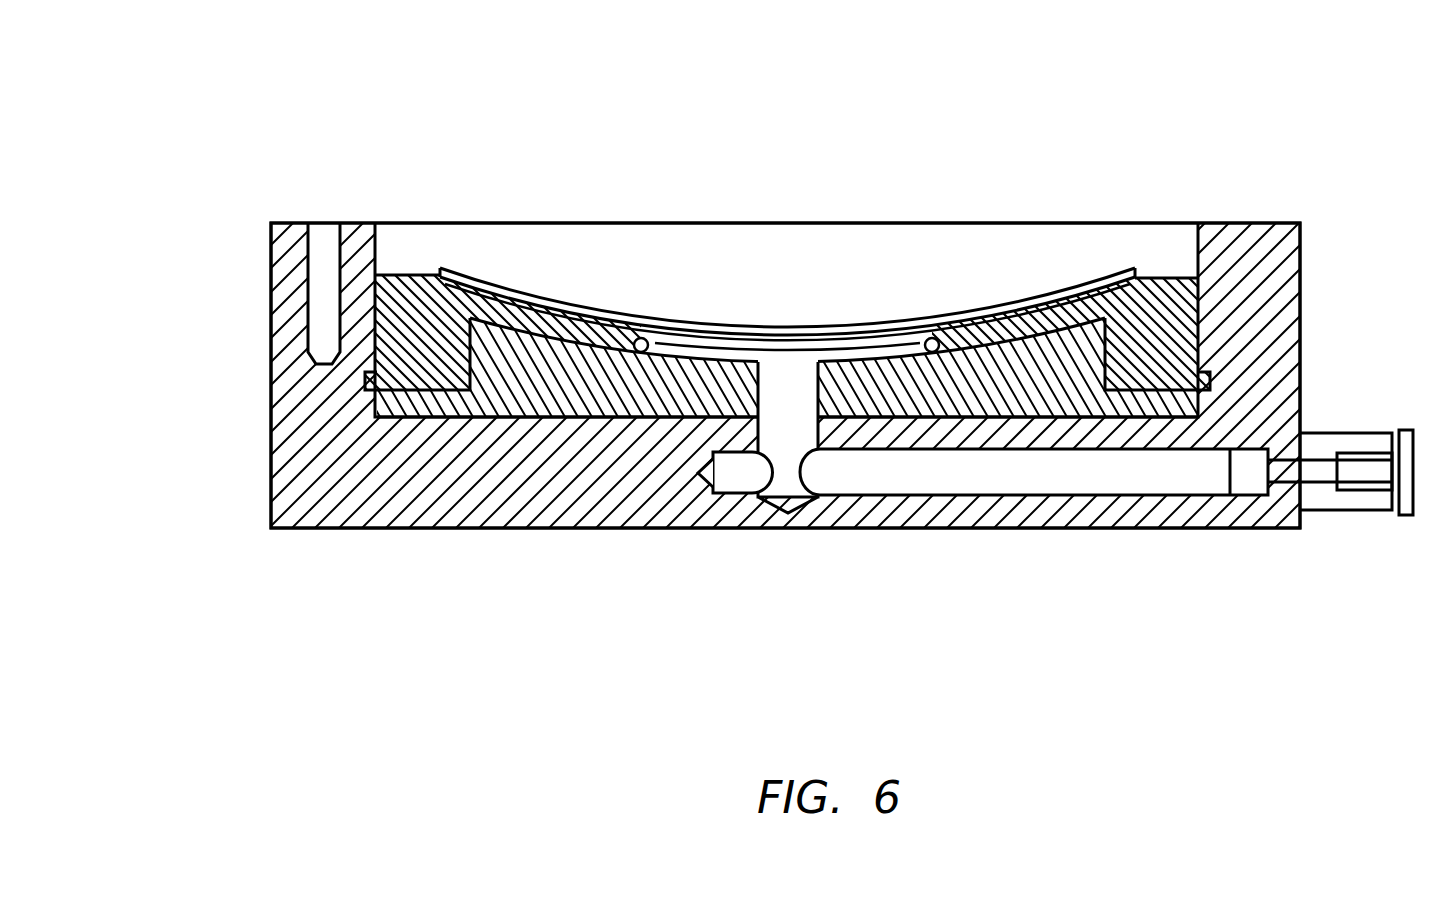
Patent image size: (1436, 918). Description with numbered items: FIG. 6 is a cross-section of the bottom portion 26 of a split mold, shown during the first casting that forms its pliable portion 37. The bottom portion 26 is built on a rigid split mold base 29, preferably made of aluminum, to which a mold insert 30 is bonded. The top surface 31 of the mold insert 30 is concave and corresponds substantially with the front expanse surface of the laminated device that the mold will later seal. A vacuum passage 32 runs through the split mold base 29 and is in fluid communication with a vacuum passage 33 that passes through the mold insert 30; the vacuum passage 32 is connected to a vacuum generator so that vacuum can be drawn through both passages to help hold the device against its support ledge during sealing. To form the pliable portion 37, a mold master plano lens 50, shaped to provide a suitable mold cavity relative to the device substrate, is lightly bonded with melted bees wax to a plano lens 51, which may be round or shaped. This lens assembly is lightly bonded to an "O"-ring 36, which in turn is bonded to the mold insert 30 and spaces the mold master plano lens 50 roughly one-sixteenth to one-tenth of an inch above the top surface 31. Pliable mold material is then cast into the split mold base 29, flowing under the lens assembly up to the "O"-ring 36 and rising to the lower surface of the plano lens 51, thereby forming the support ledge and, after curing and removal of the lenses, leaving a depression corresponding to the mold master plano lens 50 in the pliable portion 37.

The bottom portion 26 is at (236, 331).
The split mold base 29 is at (358, 504).
The mold insert 30 is at (1072, 384).
The top surface 31 is at (995, 326).
The vacuum passage 32 is at (1108, 493).
The vacuum passage 33 is at (789, 416).
The "O"-ring 36 is at (640, 369).
The pliable portion 37 is at (420, 270).
The mold master plano lens 50 is at (734, 316).
The plano lens 51 is at (827, 318).